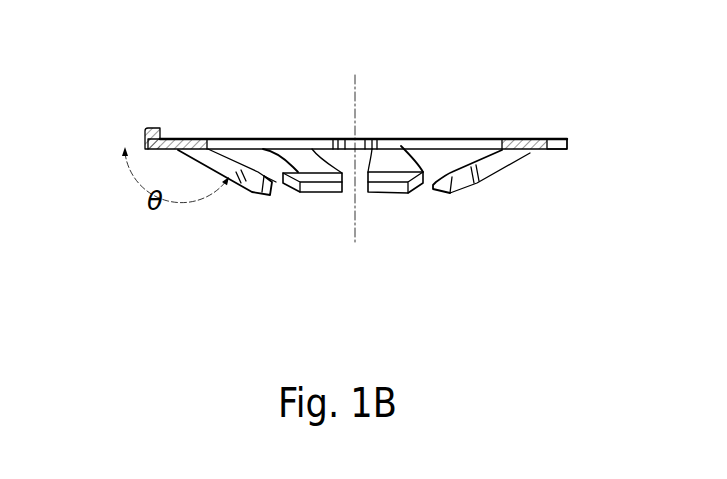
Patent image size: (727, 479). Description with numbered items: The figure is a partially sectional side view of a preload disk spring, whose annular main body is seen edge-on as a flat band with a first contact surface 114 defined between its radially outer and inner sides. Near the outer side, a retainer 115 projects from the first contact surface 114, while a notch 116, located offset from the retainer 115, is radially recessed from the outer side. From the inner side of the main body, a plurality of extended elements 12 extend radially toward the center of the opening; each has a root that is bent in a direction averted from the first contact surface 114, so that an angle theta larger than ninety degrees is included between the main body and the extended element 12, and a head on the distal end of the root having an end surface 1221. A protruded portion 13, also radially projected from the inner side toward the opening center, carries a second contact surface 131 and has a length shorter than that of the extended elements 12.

The extended element 12 is at (415, 137).
The protruded portion 13 is at (357, 153).
The second contact surface 131 is at (352, 138).
The first contact surface 114 is at (525, 137).
The retainer 115 is at (157, 128).
The notch 116 is at (557, 153).
The end surface 1221 is at (315, 190).